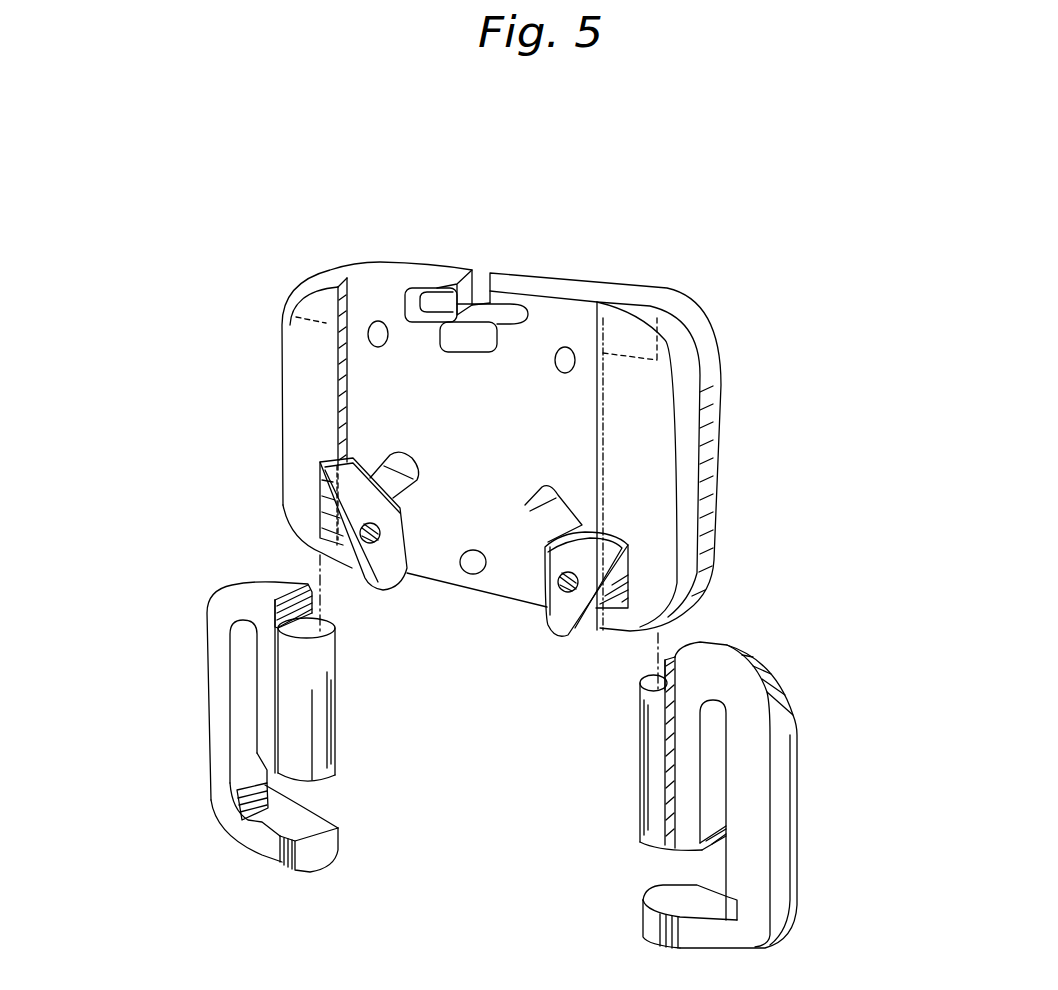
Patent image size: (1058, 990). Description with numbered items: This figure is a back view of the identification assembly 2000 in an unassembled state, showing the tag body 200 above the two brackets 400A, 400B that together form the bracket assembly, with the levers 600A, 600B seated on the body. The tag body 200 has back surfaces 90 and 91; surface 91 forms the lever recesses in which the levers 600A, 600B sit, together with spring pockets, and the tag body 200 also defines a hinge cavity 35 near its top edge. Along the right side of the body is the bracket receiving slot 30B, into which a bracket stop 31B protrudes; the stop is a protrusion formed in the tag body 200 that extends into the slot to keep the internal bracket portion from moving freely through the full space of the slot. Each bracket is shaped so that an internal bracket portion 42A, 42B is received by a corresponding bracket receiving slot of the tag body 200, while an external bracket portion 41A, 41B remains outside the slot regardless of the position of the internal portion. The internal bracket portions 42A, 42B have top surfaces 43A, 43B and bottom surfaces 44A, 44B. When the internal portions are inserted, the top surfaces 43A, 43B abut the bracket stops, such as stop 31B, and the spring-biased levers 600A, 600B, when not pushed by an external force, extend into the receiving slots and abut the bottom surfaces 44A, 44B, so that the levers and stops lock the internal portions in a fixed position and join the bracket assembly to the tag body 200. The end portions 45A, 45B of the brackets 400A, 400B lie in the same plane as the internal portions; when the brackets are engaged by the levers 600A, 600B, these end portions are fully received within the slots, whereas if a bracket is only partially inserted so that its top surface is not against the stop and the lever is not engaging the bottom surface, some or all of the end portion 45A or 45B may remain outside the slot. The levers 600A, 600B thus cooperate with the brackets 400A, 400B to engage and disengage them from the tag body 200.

The identification assembly 2000 is at (150, 160).
The tag body 200 is at (623, 323).
The hinge cavity 35 is at (493, 289).
The back surface 91 is at (367, 387).
The bracket stop 31B is at (641, 358).
The back surface 90 is at (641, 423).
The bracket receiving slot 30B is at (702, 461).
The lever 600A is at (396, 586).
The lever 600B is at (550, 636).
The bracket 400A is at (194, 730).
The external bracket portion 41A is at (208, 663).
The internal bracket portion 42A is at (331, 697).
The top surface 43A is at (312, 626).
The bottom surface 44A is at (331, 768).
The end portion 45A is at (295, 861).
The bracket 400B is at (808, 853).
The external bracket portion 41B is at (790, 691).
The internal bracket portion 42B is at (651, 763).
The top surface 43B is at (676, 668).
The bottom surface 44B is at (651, 847).
The end portion 45B is at (657, 917).